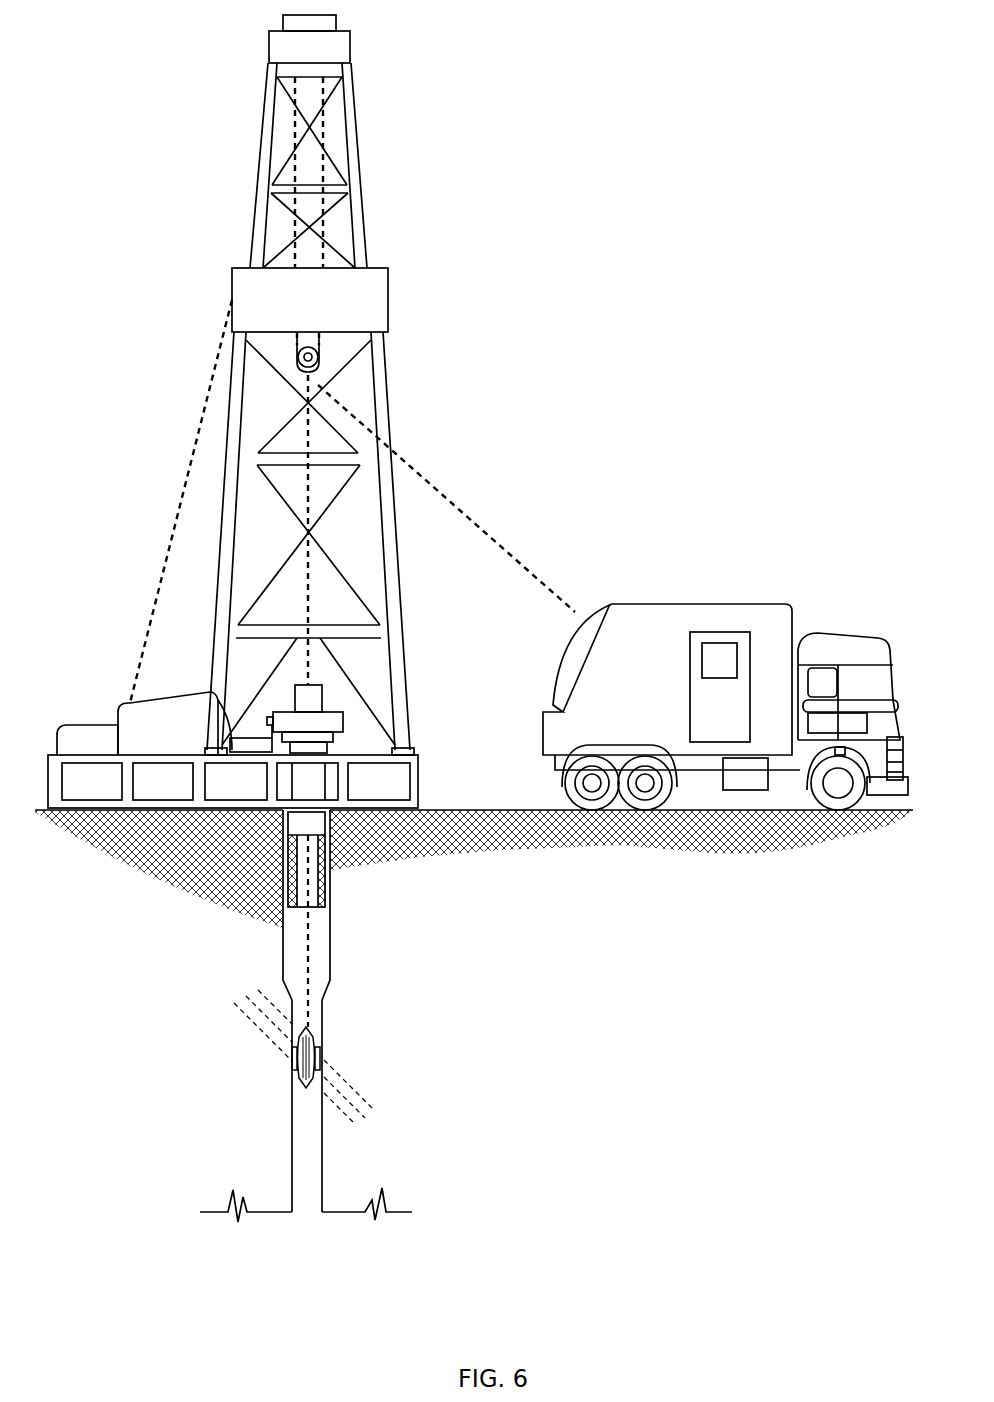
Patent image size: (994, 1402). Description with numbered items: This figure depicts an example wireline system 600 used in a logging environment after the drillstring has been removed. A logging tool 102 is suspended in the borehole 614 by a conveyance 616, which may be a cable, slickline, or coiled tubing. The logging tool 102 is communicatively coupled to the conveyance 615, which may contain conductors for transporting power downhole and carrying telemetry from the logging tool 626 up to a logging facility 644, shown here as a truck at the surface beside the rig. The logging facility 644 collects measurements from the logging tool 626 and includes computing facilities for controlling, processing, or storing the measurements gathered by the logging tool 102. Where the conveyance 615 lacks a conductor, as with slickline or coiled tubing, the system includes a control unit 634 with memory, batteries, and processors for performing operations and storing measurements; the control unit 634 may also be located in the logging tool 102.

The system 600 is at (552, 403).
The logging facility 644 is at (692, 604).
The control unit 634 is at (325, 708).
The conveyance 615 is at (318, 893).
The conveyance 616 is at (318, 975).
The logging tool 102 is at (307, 1052).
The logging tool 626 is at (300, 1068).
The borehole 614 is at (292, 1157).